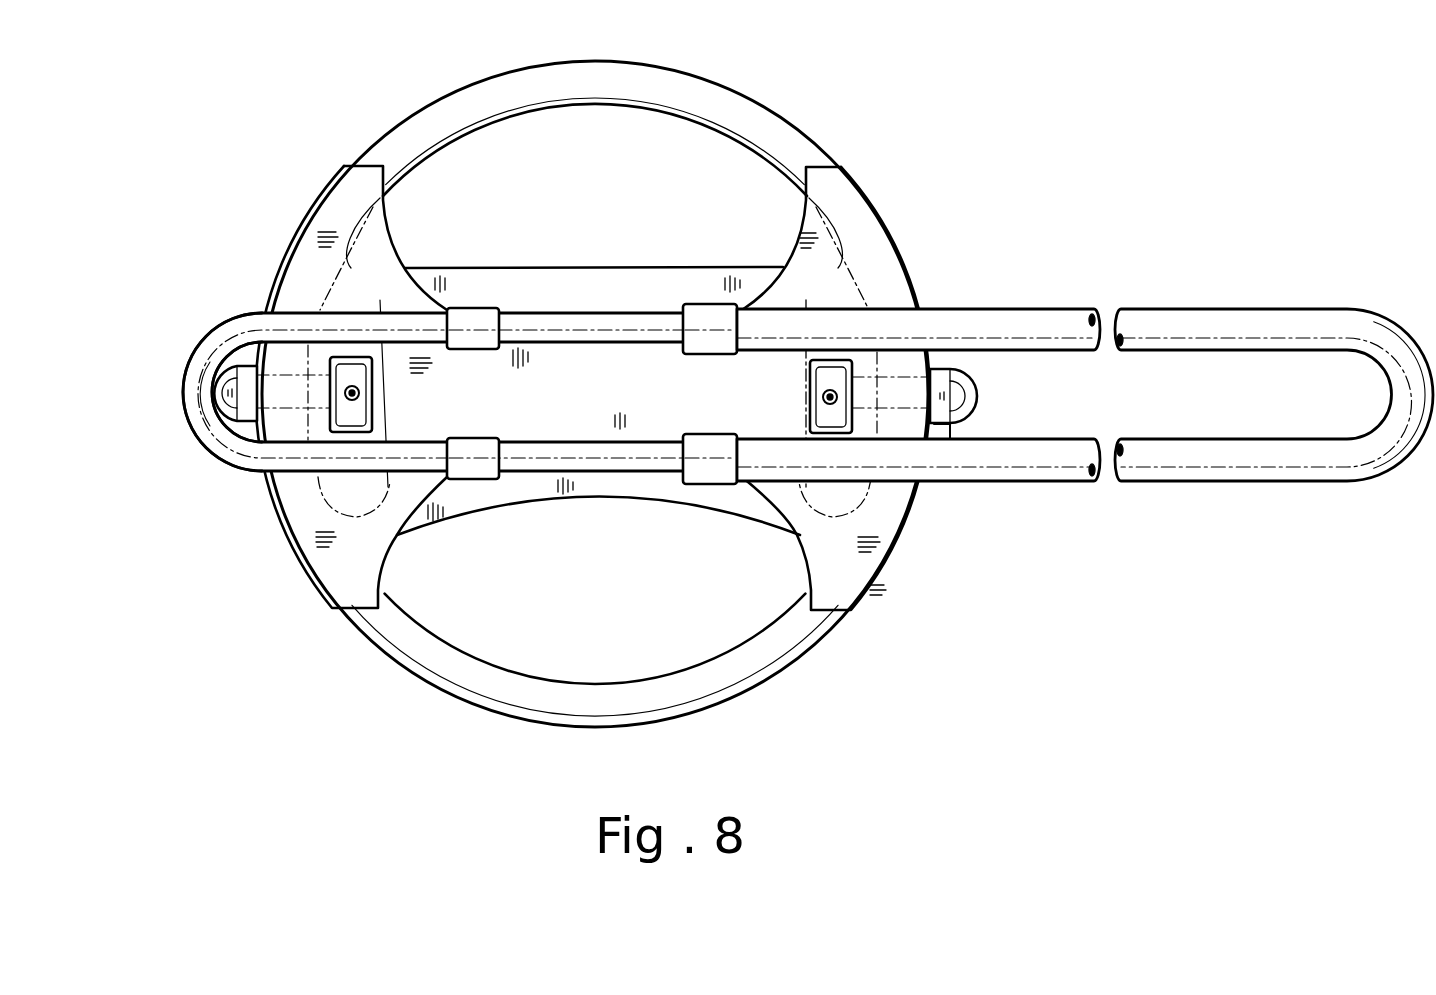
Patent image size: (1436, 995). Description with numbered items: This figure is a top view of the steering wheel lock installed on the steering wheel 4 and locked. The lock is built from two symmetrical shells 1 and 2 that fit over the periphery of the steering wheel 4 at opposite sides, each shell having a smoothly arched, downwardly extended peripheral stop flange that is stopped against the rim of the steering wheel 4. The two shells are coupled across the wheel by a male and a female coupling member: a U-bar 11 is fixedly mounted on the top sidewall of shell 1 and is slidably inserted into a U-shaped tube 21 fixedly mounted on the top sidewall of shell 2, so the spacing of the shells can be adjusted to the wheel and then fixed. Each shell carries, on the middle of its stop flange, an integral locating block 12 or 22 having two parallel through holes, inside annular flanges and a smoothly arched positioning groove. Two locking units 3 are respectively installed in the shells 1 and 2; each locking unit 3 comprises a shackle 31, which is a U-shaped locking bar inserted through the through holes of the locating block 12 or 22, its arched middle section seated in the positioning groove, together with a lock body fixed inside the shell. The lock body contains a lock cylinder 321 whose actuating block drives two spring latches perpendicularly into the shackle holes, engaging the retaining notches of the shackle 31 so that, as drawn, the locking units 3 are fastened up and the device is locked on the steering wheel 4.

The shell 1 is at (337, 192).
The shell 2 is at (838, 213).
The locking unit 3 is at (346, 357).
The steering wheel 4 is at (658, 63).
The U-bar 11 is at (538, 312).
The locating block 12 is at (243, 427).
The U-shaped tube 21 is at (1219, 310).
The locating block 22 is at (940, 426).
The shackle 31 is at (978, 391).
The lock cylinder 321 is at (358, 393).